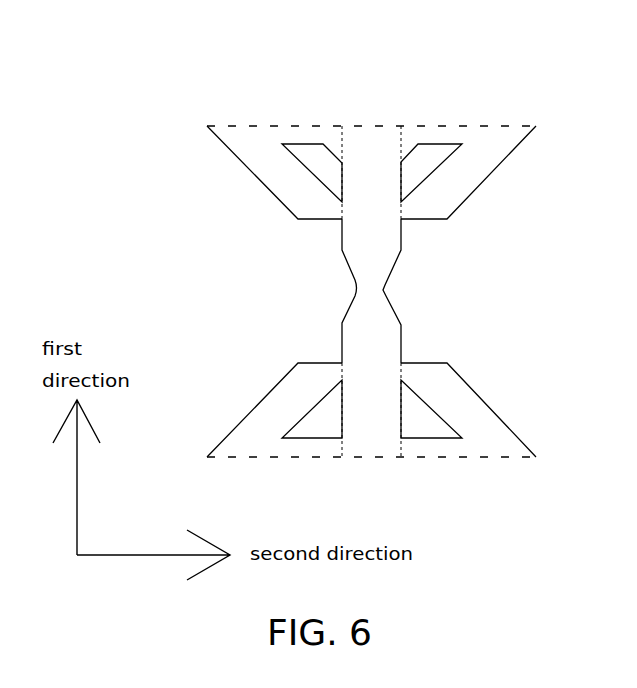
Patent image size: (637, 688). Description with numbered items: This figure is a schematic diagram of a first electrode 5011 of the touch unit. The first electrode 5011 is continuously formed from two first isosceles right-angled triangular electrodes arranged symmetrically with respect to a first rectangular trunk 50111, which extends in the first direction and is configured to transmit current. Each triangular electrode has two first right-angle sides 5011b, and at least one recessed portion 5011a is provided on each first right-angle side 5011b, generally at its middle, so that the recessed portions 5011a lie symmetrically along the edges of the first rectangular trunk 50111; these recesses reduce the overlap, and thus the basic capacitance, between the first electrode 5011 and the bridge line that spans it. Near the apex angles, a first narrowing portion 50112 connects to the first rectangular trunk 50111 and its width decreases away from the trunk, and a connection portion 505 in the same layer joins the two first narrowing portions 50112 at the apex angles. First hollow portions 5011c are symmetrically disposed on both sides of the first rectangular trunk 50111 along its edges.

The first electrode 5011 is at (418, 12).
The recessed portion 5011a is at (423, 263).
The first right-angle side 5011b is at (257, 173).
The first hollow portion 5011c is at (430, 422).
The connection portion 505 is at (363, 291).
The first rectangular trunk 50111 is at (367, 422).
The first narrowing portion 50112 is at (362, 322).